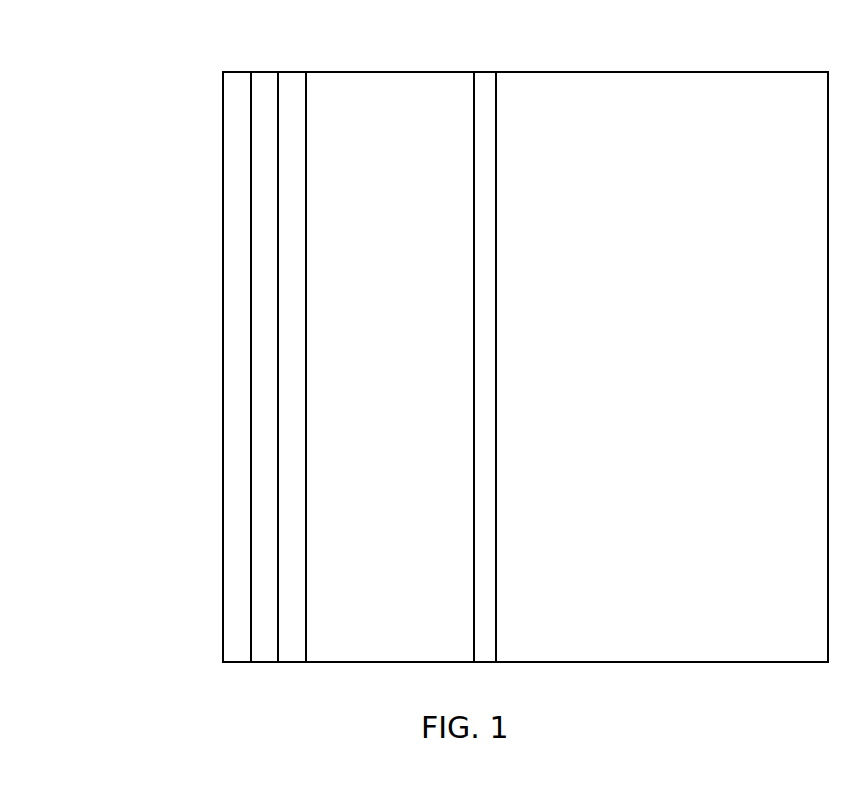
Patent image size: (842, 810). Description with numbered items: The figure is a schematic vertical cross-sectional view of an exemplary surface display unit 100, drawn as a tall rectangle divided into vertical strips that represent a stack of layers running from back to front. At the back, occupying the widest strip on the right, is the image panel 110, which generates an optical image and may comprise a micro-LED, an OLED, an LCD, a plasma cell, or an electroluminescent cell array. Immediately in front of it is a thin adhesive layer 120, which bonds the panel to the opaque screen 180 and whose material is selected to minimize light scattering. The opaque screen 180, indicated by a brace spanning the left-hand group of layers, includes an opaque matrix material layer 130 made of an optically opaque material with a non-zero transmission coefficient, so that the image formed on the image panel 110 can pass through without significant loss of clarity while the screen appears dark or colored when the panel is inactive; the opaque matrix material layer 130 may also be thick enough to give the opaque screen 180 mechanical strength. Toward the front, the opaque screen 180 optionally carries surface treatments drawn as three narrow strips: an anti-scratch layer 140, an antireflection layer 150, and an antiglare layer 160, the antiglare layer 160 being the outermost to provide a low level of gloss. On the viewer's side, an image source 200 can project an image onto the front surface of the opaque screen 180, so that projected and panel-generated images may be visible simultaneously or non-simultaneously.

The surface display unit 100 is at (158, 92).
The image panel 110 is at (662, 367).
The adhesive layer 120 is at (485, 312).
The opaque matrix material layer 130 is at (390, 367).
The anti-scratch layer 140 is at (293, 333).
The antireflection layer 150 is at (260, 285).
The antiglare layer 160 is at (233, 235).
The opaque screen 180 is at (472, 57).
The image source 200 is at (113, 372).